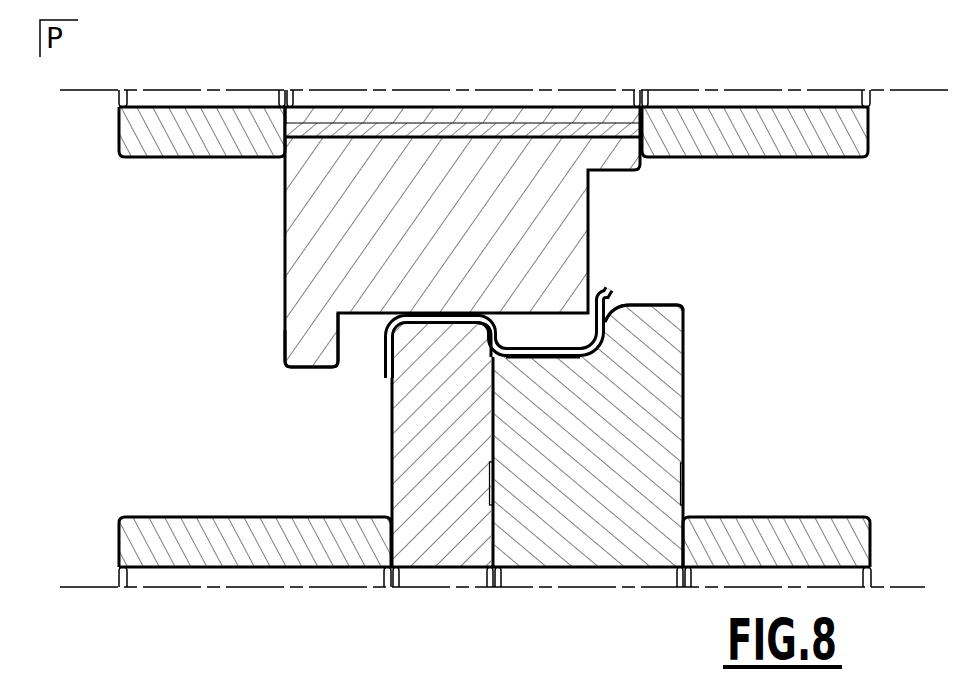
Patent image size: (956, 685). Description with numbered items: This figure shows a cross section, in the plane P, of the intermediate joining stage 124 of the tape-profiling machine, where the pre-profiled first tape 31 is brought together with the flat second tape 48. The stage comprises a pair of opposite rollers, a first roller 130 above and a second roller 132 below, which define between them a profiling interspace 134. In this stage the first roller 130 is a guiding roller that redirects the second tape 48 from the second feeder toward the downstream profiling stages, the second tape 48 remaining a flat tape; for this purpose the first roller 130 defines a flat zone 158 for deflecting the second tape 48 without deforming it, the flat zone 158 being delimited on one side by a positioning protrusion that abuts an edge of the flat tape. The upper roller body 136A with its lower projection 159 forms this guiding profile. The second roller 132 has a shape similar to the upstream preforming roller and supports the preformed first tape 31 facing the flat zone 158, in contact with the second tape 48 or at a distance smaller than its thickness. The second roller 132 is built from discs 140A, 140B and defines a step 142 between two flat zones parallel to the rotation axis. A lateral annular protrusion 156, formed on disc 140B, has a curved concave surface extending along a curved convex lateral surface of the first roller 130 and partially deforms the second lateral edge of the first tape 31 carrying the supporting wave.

The first roller 130 is at (118, 198).
The second roller 132 is at (138, 618).
The intermediate joining stage 124 is at (340, 230).
The block body 136A is at (462, 203).
The flat zone 158 is at (522, 308).
The protrusion 159 is at (320, 343).
The second tape 48 is at (481, 369).
The first support block 140A is at (440, 525).
The disc 140B is at (590, 525).
The profiling interspace 134 is at (624, 425).
The lateral annular protrusion 156 is at (648, 318).
The first tape 31 is at (550, 353).
The step 142 is at (483, 345).